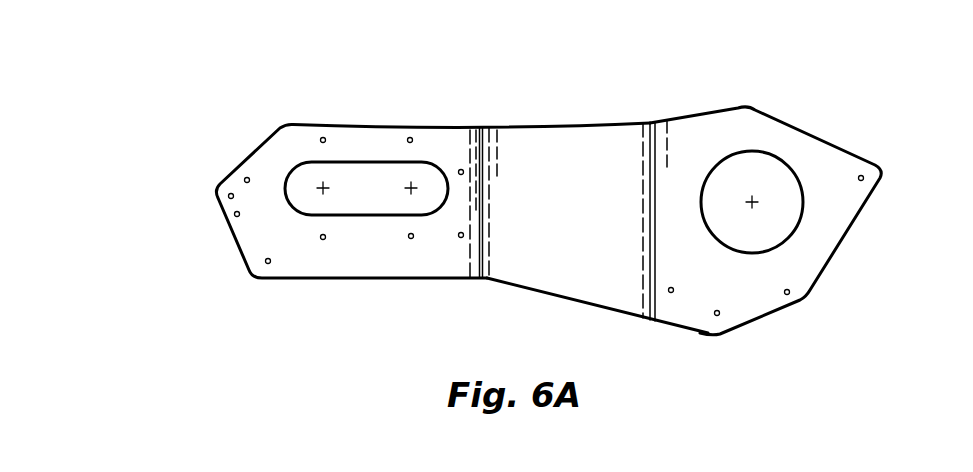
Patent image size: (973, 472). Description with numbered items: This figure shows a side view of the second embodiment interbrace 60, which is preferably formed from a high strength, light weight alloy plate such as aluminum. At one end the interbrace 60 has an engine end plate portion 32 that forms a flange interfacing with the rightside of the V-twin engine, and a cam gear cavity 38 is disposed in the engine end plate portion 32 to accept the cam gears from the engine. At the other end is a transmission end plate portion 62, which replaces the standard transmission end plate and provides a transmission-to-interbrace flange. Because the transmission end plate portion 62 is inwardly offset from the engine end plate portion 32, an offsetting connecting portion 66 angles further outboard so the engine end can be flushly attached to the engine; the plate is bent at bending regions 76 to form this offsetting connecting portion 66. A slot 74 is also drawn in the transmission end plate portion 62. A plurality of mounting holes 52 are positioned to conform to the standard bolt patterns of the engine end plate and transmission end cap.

The interbrace 60 is at (108, 127).
The transmission end plate portion 62 is at (272, 153).
The offsetting connecting portion 66 is at (562, 263).
The engine end plate portion 32 is at (787, 135).
The elongated slot 74 is at (357, 180).
The bending regions 76 is at (485, 187).
The cam gear cavity 38 is at (787, 181).
The mounting holes 52 is at (237, 214).